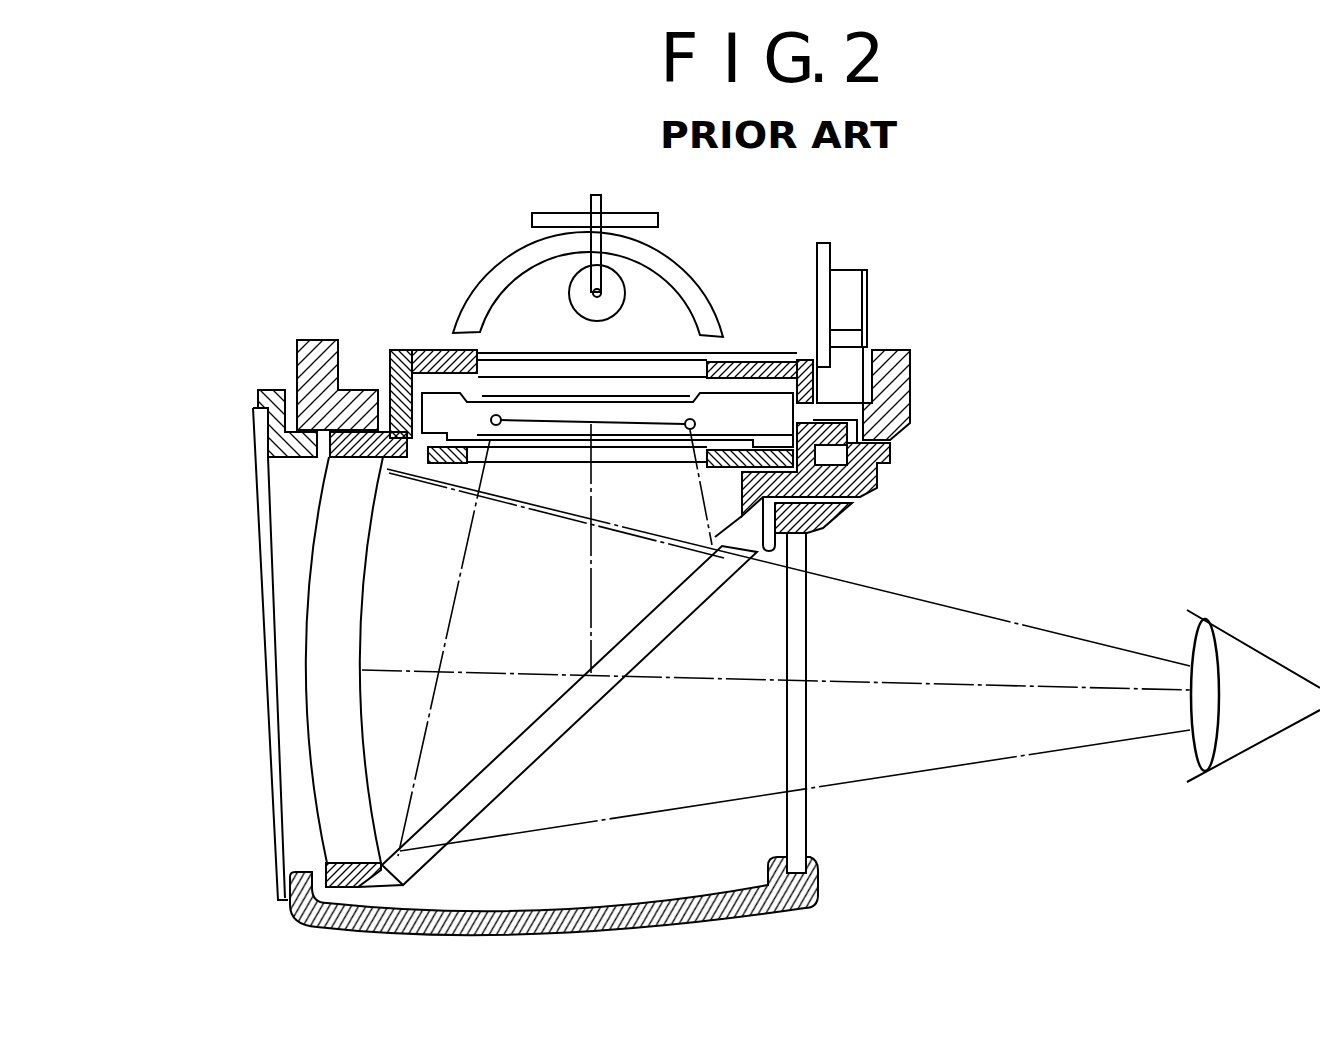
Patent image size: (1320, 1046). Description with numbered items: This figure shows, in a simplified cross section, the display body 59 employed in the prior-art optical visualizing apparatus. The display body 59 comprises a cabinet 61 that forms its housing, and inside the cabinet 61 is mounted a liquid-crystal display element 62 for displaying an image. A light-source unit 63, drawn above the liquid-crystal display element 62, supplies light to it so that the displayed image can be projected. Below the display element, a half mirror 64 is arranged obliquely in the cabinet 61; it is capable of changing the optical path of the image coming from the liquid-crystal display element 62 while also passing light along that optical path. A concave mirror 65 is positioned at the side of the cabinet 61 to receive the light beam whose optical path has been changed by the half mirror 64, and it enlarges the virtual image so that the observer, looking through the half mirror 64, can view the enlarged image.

The display body 59 is at (873, 220).
The cabinet 61 is at (875, 487).
The liquid-crystal display element 62 is at (773, 418).
The light-source unit 63 is at (673, 280).
The half mirror 64 is at (503, 773).
The concave mirror 65 is at (333, 817).